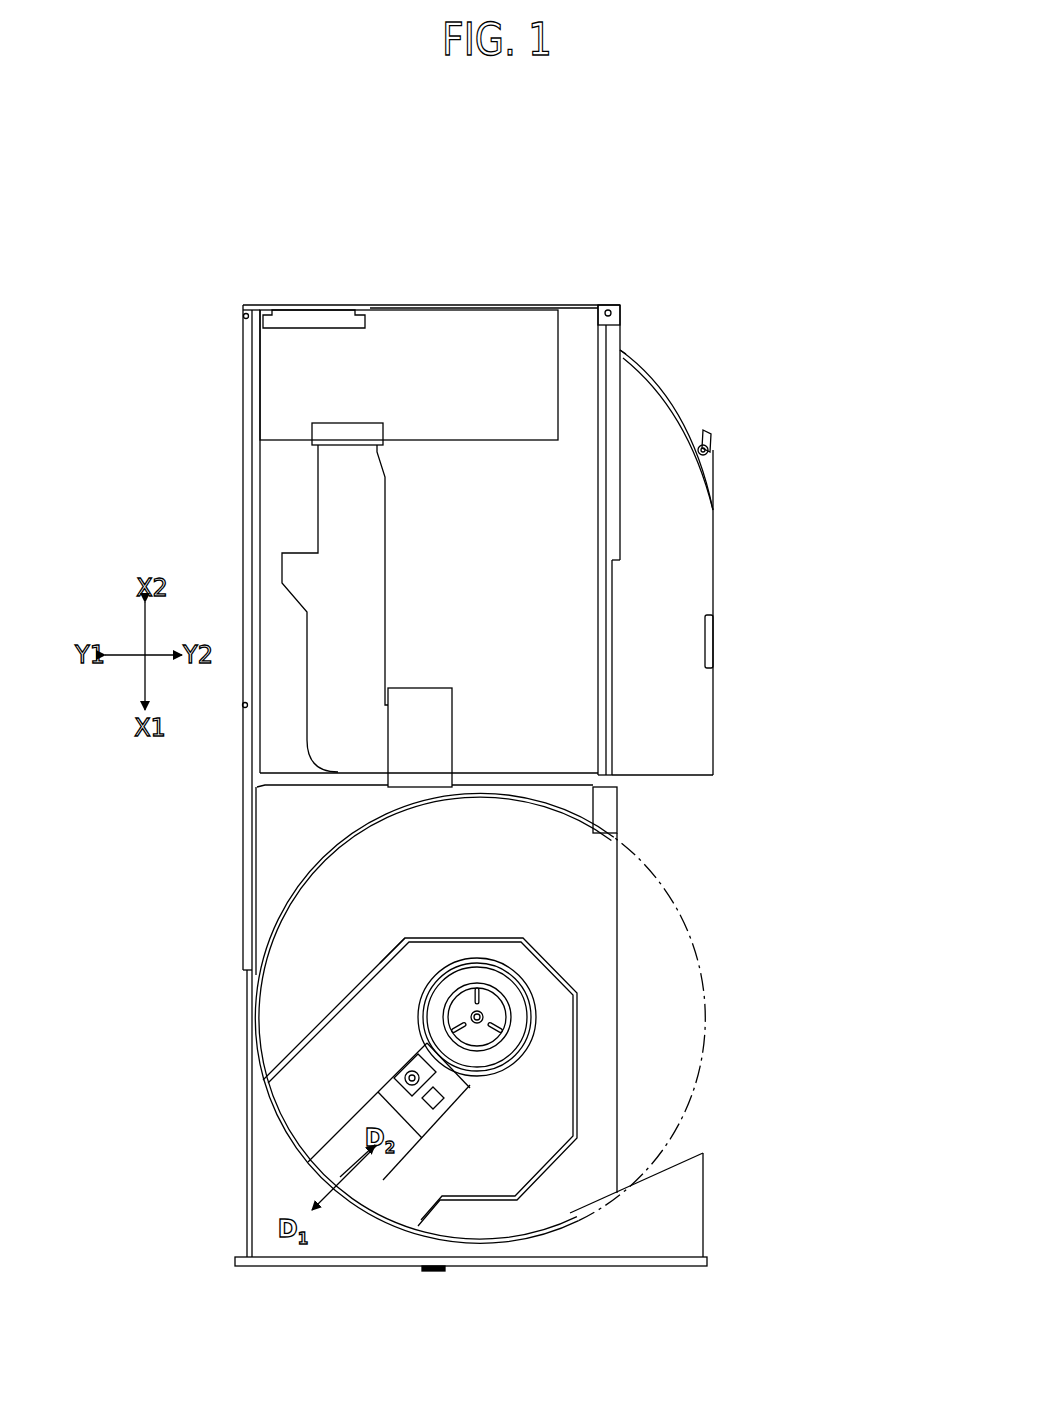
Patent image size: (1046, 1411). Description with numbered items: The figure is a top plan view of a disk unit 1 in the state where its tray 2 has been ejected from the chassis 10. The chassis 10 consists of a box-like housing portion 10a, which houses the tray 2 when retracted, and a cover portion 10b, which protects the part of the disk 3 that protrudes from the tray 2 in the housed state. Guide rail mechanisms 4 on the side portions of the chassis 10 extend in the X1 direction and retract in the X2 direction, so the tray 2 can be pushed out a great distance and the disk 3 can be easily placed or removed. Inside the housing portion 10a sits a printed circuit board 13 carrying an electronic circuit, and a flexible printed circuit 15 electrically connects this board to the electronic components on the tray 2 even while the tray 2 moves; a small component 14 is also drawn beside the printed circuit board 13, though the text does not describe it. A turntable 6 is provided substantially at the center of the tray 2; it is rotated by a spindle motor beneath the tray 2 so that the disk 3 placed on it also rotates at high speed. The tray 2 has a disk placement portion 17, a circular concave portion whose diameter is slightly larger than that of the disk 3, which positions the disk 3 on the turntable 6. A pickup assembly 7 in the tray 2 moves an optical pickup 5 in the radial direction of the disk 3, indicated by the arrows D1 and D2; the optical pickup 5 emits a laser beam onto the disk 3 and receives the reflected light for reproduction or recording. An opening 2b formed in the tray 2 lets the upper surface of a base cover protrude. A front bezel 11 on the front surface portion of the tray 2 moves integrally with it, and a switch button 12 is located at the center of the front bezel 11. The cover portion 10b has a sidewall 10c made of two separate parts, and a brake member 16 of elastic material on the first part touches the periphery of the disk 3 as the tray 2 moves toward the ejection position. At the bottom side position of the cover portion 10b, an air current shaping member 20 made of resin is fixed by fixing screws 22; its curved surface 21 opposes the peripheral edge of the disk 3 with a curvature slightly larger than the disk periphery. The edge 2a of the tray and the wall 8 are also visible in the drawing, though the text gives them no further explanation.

The disk unit 1 is at (632, 223).
The tray 2 is at (275, 1222).
The curved edge of chassis 2a is at (300, 928).
The opening 2b is at (378, 972).
The disk 3 is at (668, 972).
The guide rail mechanisms 4 is at (245, 832).
The optical pickup 5 is at (455, 1090).
The turntable 6 is at (490, 1003).
The pickup assembly 7 is at (318, 1060).
The side wall 8 is at (617, 920).
The chassis 10 is at (243, 532).
The housing portion 10a is at (552, 635).
The cover portion 10b is at (688, 548).
The sidewall 10c is at (715, 477).
The front bezel 11 is at (340, 1268).
The switch button 12 is at (437, 1270).
The printed circuit board 13 is at (492, 335).
The connector 14 is at (320, 308).
The flexible printed circuit 15 is at (375, 597).
The brake member 16 is at (700, 652).
The disk placement portion 17 is at (287, 1117).
The air current shaping member 20 is at (697, 420).
The curved surface 21 is at (652, 397).
The fixing screws 22 is at (711, 440).